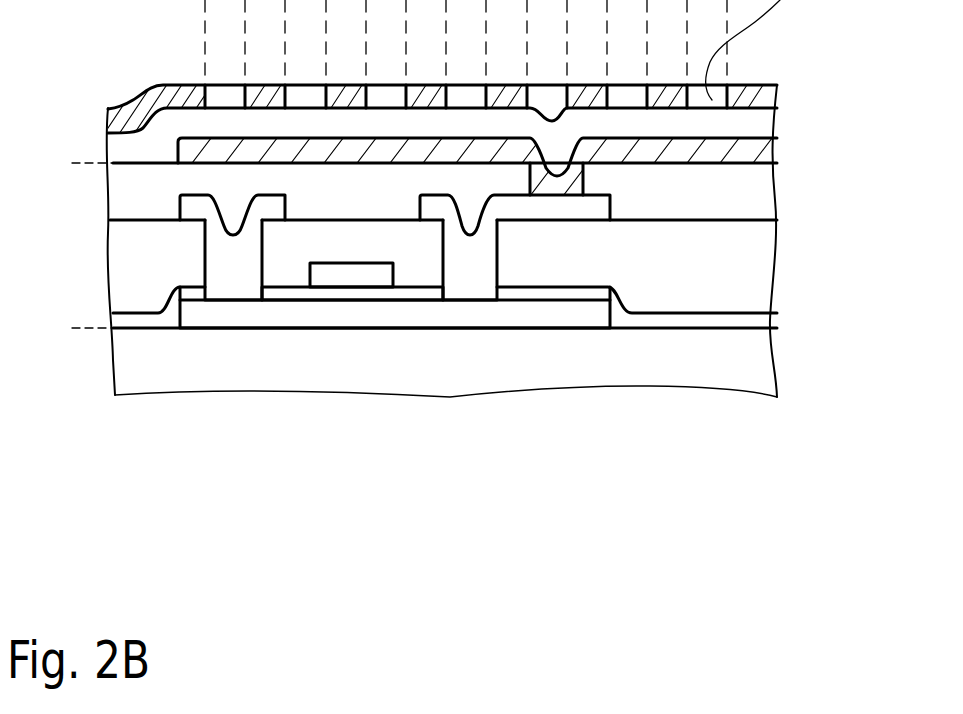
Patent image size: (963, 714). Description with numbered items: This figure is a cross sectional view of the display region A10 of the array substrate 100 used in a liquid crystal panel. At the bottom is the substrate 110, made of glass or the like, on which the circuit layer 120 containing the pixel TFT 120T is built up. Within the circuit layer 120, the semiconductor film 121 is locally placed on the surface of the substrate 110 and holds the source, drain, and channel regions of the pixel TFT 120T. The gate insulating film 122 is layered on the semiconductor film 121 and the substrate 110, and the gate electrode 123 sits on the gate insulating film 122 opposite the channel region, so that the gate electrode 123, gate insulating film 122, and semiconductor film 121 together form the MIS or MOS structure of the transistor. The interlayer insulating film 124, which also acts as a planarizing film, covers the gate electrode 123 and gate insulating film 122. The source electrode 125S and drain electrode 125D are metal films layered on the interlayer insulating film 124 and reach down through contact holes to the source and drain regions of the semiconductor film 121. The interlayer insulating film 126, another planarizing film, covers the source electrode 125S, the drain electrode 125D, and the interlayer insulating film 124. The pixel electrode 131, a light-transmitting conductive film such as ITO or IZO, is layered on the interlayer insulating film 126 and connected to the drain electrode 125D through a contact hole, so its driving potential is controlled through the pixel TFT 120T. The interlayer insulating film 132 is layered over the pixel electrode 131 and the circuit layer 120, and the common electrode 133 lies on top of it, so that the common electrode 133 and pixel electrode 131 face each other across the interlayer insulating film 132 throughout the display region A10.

The array substrate 100 is at (115, 513).
The substrate 110 is at (757, 355).
The circuit layer 120 is at (82, 164).
The pixel TFT 120T is at (560, 345).
The semiconductor film 121 is at (283, 318).
The gate insulating film 122 is at (342, 297).
The gate electrode 123 is at (370, 278).
The interlayer insulating film 124 is at (758, 277).
The source electrode 125S is at (233, 288).
The drain electrode 125D is at (472, 285).
The interlayer insulating film 126 is at (750, 193).
The pixel electrode 131 is at (760, 150).
The interlayer insulating film 132 is at (758, 125).
The common electrode 133 is at (758, 84).
The display region A10 is at (777, 495).